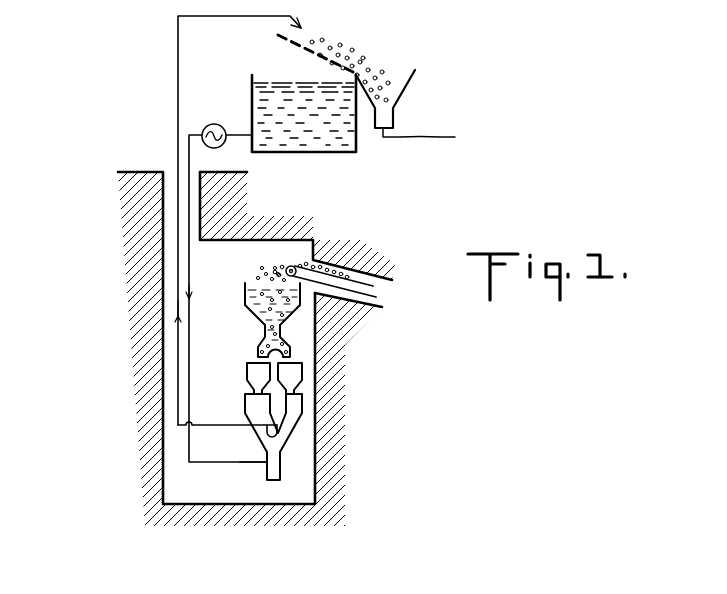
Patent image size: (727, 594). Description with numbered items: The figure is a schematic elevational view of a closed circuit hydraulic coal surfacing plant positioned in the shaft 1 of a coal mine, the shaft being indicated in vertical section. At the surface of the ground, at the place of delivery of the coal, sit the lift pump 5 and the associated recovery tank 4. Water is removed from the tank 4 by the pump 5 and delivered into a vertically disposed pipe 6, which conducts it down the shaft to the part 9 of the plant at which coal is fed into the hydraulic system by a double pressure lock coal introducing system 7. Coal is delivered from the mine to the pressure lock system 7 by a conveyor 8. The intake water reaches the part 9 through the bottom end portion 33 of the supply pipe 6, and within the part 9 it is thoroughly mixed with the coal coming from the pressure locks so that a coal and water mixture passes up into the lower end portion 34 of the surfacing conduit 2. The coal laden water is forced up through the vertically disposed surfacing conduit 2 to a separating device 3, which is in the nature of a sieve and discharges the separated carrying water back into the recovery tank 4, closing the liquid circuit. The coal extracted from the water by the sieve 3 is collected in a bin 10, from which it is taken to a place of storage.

The shaft 1 is at (206, 267).
The surfacing conduit 2 is at (177, 326).
The separating device 3 is at (320, 53).
The recovery tank 4 is at (325, 133).
The lift pump 5 is at (214, 148).
The pipe 6 is at (189, 153).
The double pressure lock coal introducing system 7 is at (306, 372).
The conveyor 8 is at (348, 270).
The part 9 is at (284, 465).
The bin 10 is at (418, 109).
The bottom end portion 33 is at (250, 462).
The lower end portion 34 is at (270, 429).